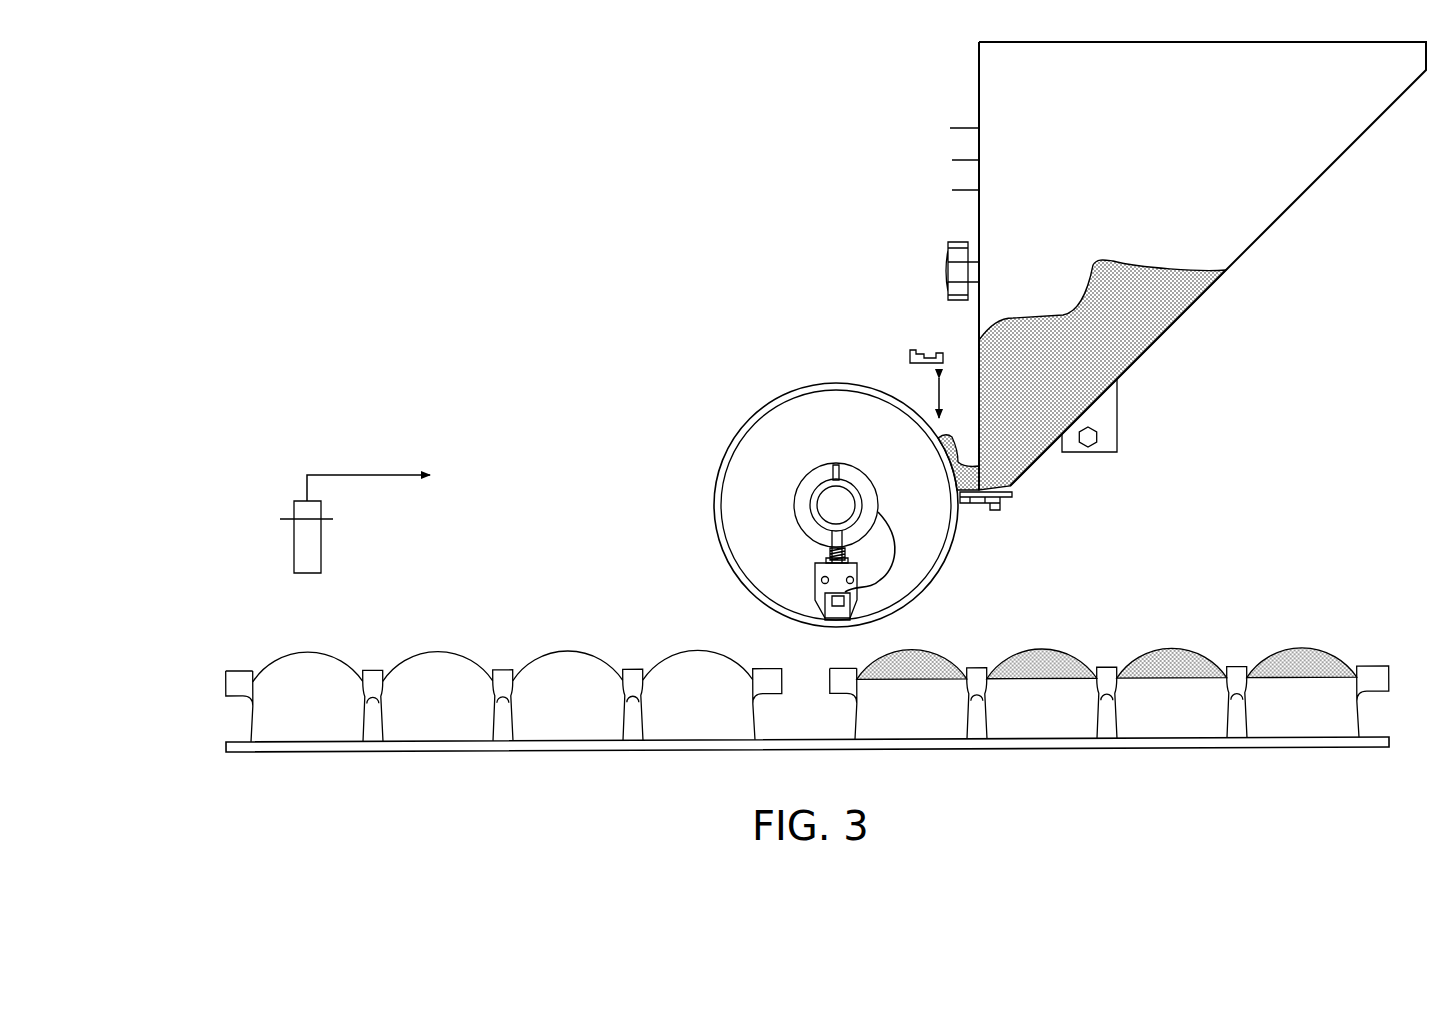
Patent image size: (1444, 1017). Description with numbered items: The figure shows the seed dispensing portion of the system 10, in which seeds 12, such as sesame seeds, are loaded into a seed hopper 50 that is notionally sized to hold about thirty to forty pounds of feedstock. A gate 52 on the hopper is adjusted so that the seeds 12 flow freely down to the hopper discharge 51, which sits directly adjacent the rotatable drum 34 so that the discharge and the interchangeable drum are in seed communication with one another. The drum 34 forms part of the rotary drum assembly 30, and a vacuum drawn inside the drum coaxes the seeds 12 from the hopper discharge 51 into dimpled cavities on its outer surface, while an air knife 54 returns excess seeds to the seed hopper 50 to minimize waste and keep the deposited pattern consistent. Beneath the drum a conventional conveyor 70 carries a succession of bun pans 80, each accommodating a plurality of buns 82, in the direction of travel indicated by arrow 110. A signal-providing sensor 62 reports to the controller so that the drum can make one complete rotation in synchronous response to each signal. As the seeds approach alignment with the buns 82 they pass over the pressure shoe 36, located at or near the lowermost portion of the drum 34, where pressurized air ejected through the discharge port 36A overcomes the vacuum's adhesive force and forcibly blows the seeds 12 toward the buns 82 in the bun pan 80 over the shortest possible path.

The system 10 is at (700, 190).
The seeds 12 is at (1128, 262).
The rotary drum assembly 30 is at (952, 567).
The rotatable drum 34 is at (770, 405).
The pressure shoe 36 is at (815, 572).
The discharge port 36A is at (832, 620).
The seed hopper 50 is at (1112, 42).
The hopper discharge 51 is at (985, 503).
The gate 52 is at (952, 190).
The air knife 54 is at (918, 350).
The signal-providing sensor 62 is at (321, 551).
The conveyor 70 is at (500, 754).
The bun pan 80 is at (764, 670).
The buns 82 is at (439, 652).
The direction of conveyor travel 110 is at (708, 771).